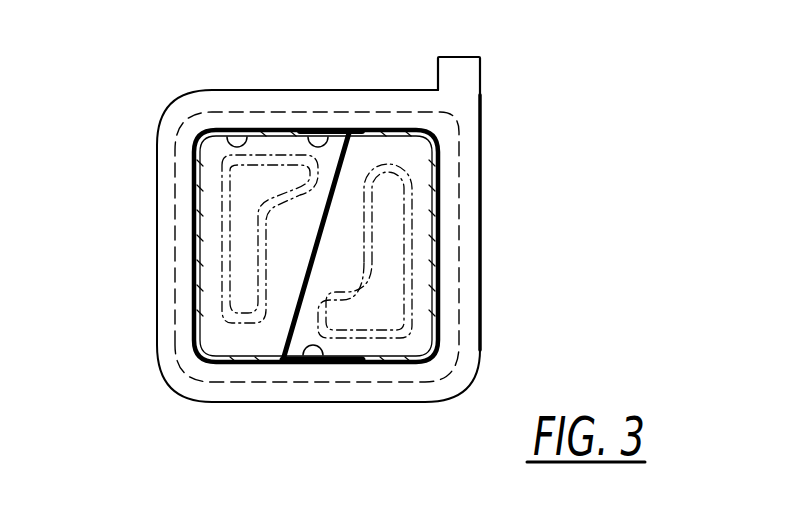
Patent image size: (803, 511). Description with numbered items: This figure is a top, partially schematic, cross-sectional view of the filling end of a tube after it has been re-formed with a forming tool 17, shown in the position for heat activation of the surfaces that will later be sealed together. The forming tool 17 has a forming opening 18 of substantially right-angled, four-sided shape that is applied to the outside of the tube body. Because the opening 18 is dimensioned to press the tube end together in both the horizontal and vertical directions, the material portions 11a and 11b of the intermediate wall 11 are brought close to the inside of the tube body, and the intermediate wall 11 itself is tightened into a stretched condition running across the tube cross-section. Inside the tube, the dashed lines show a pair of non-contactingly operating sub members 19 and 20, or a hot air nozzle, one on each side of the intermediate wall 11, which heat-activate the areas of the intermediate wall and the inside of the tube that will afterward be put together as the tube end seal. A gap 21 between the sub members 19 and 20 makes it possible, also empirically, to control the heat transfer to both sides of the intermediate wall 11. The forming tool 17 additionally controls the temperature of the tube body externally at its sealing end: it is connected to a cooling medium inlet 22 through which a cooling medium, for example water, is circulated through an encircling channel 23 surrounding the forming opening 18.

The intermediate wall 11 is at (305, 245).
The material portion of the intermediate wall 11a is at (330, 128).
The material portion of the intermediate wall 11b is at (322, 367).
The forming tool 17 is at (483, 160).
The forming opening 18 is at (231, 128).
The sub member 19 is at (470, 195).
The sub member 20 is at (238, 189).
The gap 21 is at (300, 238).
The cooling medium inlet 22 is at (455, 57).
The encircling channel 23 is at (470, 312).